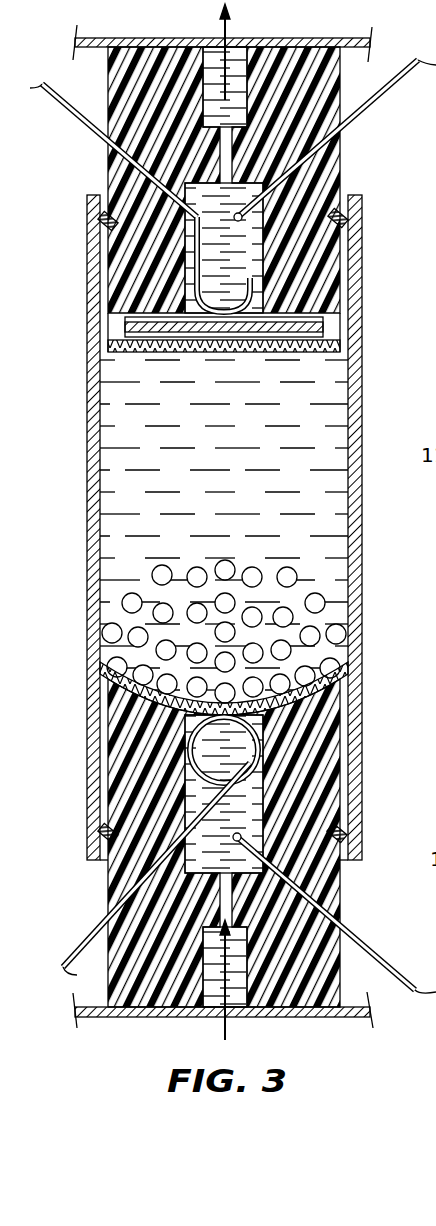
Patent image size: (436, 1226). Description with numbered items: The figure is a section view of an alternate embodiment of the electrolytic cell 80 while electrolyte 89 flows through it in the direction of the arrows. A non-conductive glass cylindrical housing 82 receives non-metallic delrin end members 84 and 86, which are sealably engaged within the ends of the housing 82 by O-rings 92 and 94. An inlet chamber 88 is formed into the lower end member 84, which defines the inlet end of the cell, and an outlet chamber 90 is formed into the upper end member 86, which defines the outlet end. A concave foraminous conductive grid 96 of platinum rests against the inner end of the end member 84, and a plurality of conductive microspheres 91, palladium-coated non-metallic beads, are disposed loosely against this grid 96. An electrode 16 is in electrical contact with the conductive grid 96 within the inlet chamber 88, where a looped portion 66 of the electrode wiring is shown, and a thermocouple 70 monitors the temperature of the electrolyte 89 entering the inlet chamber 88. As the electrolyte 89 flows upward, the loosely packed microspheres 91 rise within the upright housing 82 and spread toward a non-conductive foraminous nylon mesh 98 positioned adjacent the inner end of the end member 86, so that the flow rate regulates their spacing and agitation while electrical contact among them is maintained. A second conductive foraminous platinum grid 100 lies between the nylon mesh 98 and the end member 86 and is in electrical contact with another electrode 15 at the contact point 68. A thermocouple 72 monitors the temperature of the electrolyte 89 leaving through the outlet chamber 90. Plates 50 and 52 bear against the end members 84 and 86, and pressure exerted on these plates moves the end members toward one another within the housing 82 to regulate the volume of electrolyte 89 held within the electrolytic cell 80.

The electrode 15 is at (86, 942).
The electrode 16 is at (80, 128).
The plate 50 is at (300, 1017).
The plate 52 is at (283, 38).
The loop electrode 66 is at (195, 752).
The electrical contact point 68 is at (195, 290).
The thermocouple 70 is at (362, 952).
The thermocouple 72 is at (378, 110).
The electrolytic cell 80 is at (372, 340).
The cylindrical housing 82 is at (362, 388).
The end member 84 is at (325, 745).
The end member 86 is at (320, 68).
The inlet chamber 88 is at (190, 792).
The electrolyte 89 is at (226, 494).
The outlet chamber 90 is at (263, 263).
The conductive microspheres 91 is at (290, 566).
The O-ring 92 is at (347, 820).
The O-ring 94 is at (337, 208).
The concave foraminous conductive grid 96 is at (292, 672).
The non-conductive foraminous nylon mesh 98 is at (191, 337).
The second conductive foraminous platinum grid 100 is at (165, 350).